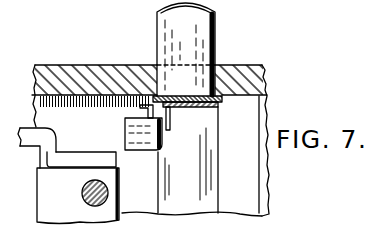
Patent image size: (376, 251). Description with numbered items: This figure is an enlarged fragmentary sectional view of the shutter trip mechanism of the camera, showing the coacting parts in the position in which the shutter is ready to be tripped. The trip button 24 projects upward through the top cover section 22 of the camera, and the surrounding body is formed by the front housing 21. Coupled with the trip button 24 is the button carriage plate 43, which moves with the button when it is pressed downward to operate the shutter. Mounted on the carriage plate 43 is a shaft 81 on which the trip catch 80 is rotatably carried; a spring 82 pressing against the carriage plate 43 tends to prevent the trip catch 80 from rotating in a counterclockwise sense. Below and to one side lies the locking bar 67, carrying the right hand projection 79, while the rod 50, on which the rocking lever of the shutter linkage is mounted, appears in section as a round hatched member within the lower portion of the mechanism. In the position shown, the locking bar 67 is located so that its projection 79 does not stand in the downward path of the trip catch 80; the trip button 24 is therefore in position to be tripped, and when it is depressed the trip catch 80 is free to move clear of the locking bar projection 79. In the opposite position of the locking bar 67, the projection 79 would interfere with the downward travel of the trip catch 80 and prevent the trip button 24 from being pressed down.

The front housing 21 is at (265, 191).
The top cover section 22 is at (246, 67).
The trip button 24 is at (215, 38).
The carriage plate 43 is at (222, 100).
The rod 50 is at (93, 207).
The locking bar 67 is at (28, 143).
The right hand projection 79 is at (86, 150).
The trip catch 80 is at (125, 133).
The shaft 81 is at (140, 107).
The spring 82 is at (175, 107).